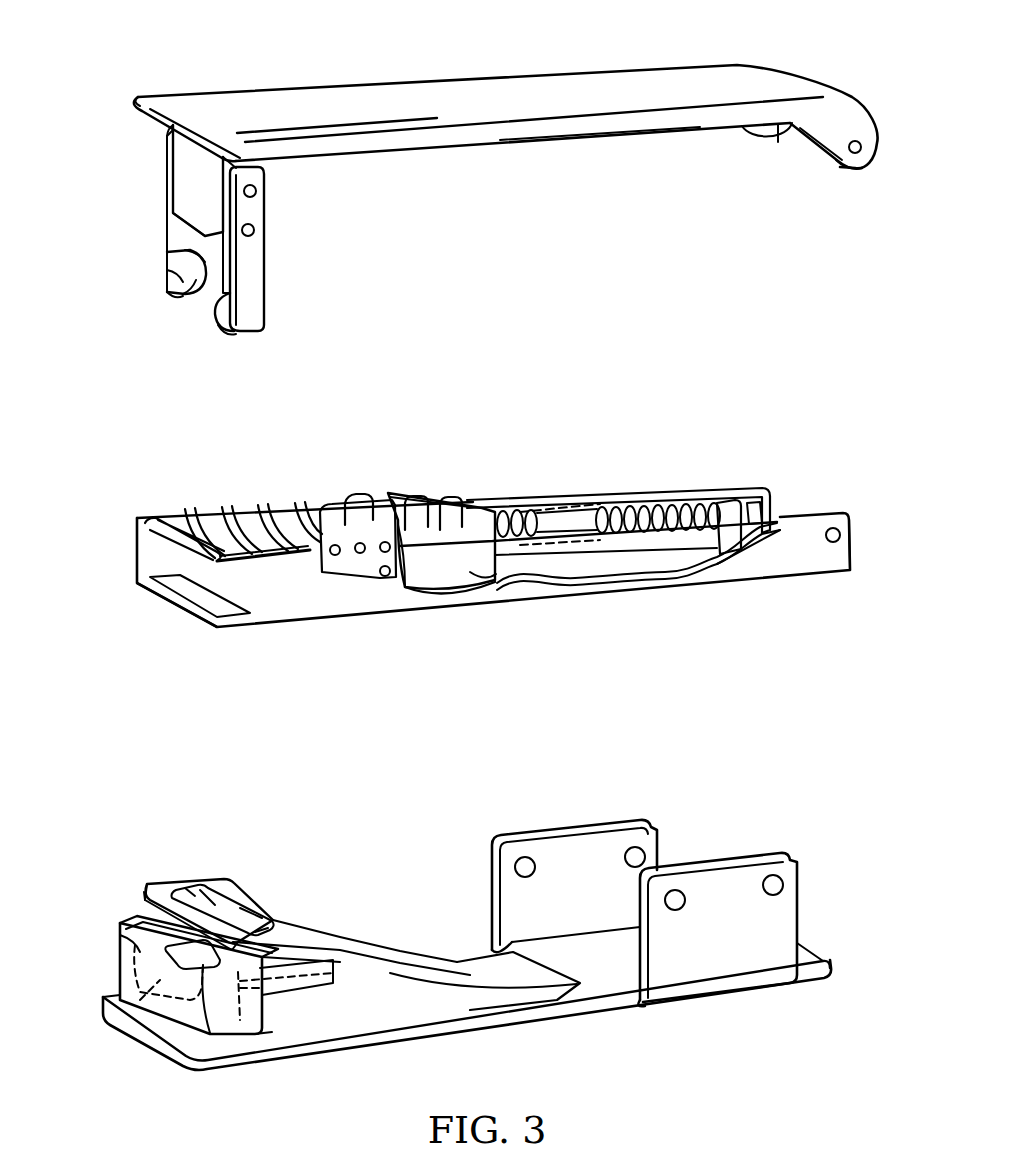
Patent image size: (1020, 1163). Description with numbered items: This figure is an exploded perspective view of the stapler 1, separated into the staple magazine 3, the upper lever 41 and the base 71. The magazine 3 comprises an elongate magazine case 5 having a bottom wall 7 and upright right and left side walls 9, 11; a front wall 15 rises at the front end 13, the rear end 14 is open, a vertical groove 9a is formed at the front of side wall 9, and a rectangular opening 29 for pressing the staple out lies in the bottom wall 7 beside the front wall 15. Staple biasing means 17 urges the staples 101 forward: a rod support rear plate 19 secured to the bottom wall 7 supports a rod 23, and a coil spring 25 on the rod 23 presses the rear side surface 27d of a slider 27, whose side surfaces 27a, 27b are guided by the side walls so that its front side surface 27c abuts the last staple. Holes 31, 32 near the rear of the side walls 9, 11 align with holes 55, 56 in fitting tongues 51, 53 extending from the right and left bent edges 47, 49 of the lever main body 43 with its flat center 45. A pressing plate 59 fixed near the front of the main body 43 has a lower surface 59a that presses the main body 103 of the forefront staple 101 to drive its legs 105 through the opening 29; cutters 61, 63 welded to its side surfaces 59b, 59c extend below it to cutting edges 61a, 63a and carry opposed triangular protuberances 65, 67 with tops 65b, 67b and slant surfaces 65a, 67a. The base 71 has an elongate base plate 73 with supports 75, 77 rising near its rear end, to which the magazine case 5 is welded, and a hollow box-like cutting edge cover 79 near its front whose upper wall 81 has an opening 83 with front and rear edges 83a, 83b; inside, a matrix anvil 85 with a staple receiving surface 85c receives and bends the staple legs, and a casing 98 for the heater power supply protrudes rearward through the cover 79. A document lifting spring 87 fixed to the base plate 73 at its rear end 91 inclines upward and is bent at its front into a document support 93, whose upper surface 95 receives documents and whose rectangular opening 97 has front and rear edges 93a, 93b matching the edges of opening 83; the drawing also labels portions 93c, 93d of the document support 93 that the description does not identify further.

The stapler 1 is at (870, 97).
The staple magazine 3 is at (822, 500).
The magazine case 5 is at (803, 572).
The bottom wall 7 is at (572, 580).
The right side wall 9 is at (730, 566).
The vertically extending groove 9a is at (248, 565).
The left side wall 11 is at (587, 495).
The front end 13 is at (217, 630).
The rear end 14 is at (851, 575).
The front wall 15 is at (140, 548).
The staple biasing means 17 is at (557, 473).
The rod support rear plate 19 is at (710, 508).
The rod 23 is at (550, 530).
The coil spring 25 is at (643, 508).
The slider 27 is at (487, 592).
The side surface of slider 27a is at (450, 595).
The side surface of slider 27b is at (385, 493).
The front side surface of slider 27c is at (410, 590).
The rear side surface of slider 27d is at (505, 584).
The opening 29 is at (180, 604).
The hole 31 is at (842, 528).
The hole 32 is at (741, 498).
The upper lever 41 is at (678, 56).
The main body 43 is at (620, 78).
The flat center 45 is at (553, 81).
The right bent edge 47 is at (625, 128).
The left bent edge 49 is at (138, 100).
The fitting tongue 51 is at (852, 170).
The fitting tongue 53 is at (750, 136).
The hole 55 is at (862, 153).
The hole 56 is at (778, 145).
The pressing plate 59 is at (188, 163).
The lower surface 59a is at (172, 223).
The side surface 59b is at (255, 173).
The side surface 59c is at (172, 130).
The cutter 61 is at (251, 256).
The cutting edge 61a is at (263, 330).
The cutter 63 is at (168, 197).
The cutting edge 63a is at (178, 301).
The protuberance 65 is at (215, 314).
The slant surface 65a is at (222, 331).
The top of protuberance 65b is at (208, 300).
The protuberance 67 is at (170, 273).
The slant surface 67a is at (165, 297).
The top of protuberance 67b is at (186, 249).
The base 71 is at (758, 830).
The base plate 73 is at (608, 1000).
The support 75 is at (740, 978).
The support 77 is at (580, 838).
The cutting edge cover 79 is at (243, 1034).
The upper wall 81 is at (125, 924).
The opening 83 is at (120, 944).
The front edge of opening 83a is at (142, 986).
The rear edge of opening 83b is at (228, 1036).
The matrix anvil 85 is at (138, 1025).
The staple receiving surface 85c is at (168, 955).
The document lifting spring 87 is at (340, 942).
The rear end of lifting spring 91 is at (540, 990).
The document support 93 is at (205, 882).
The front edge of opening 93a is at (188, 890).
The rear edge of opening 93b is at (248, 905).
The frame corner 93c is at (268, 926).
The slot edge 93d is at (195, 888).
The upper surface 95 is at (147, 884).
The opening 97 is at (212, 900).
The casing 98 is at (310, 990).
The staple 101 is at (316, 508).
The main body of staple 103 is at (245, 512).
The leg of staple 105 is at (358, 570).